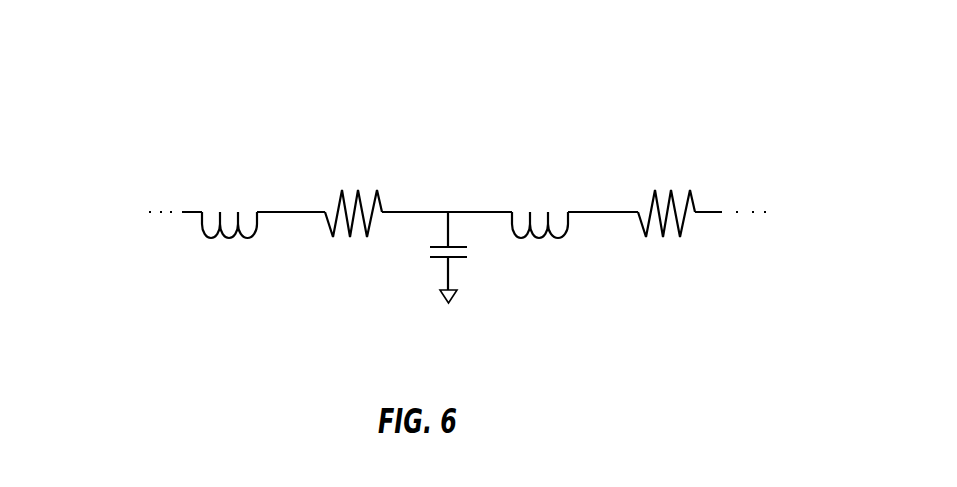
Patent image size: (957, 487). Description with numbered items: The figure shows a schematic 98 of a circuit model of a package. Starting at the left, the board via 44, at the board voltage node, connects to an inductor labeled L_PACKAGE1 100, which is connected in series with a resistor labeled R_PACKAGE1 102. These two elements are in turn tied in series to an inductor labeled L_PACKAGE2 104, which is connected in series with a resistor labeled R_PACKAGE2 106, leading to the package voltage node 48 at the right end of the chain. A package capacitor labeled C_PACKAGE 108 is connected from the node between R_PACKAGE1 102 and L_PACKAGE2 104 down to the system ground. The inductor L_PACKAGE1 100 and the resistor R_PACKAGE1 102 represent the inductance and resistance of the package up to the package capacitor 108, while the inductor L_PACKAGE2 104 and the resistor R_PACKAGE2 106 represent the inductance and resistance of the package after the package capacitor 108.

The schematic 98 is at (163, 80).
The board via 44 is at (140, 212).
The package voltage node (V package) 48 is at (752, 210).
The inductor L_PACKAGE1 100 is at (230, 238).
The resistor R_PACKAGE1 102 is at (350, 237).
The inductor L_PACKAGE2 104 is at (558, 237).
The resistor R_PACKAGE2 106 is at (660, 235).
The package capacitor C_PACKAGE 108 is at (428, 253).